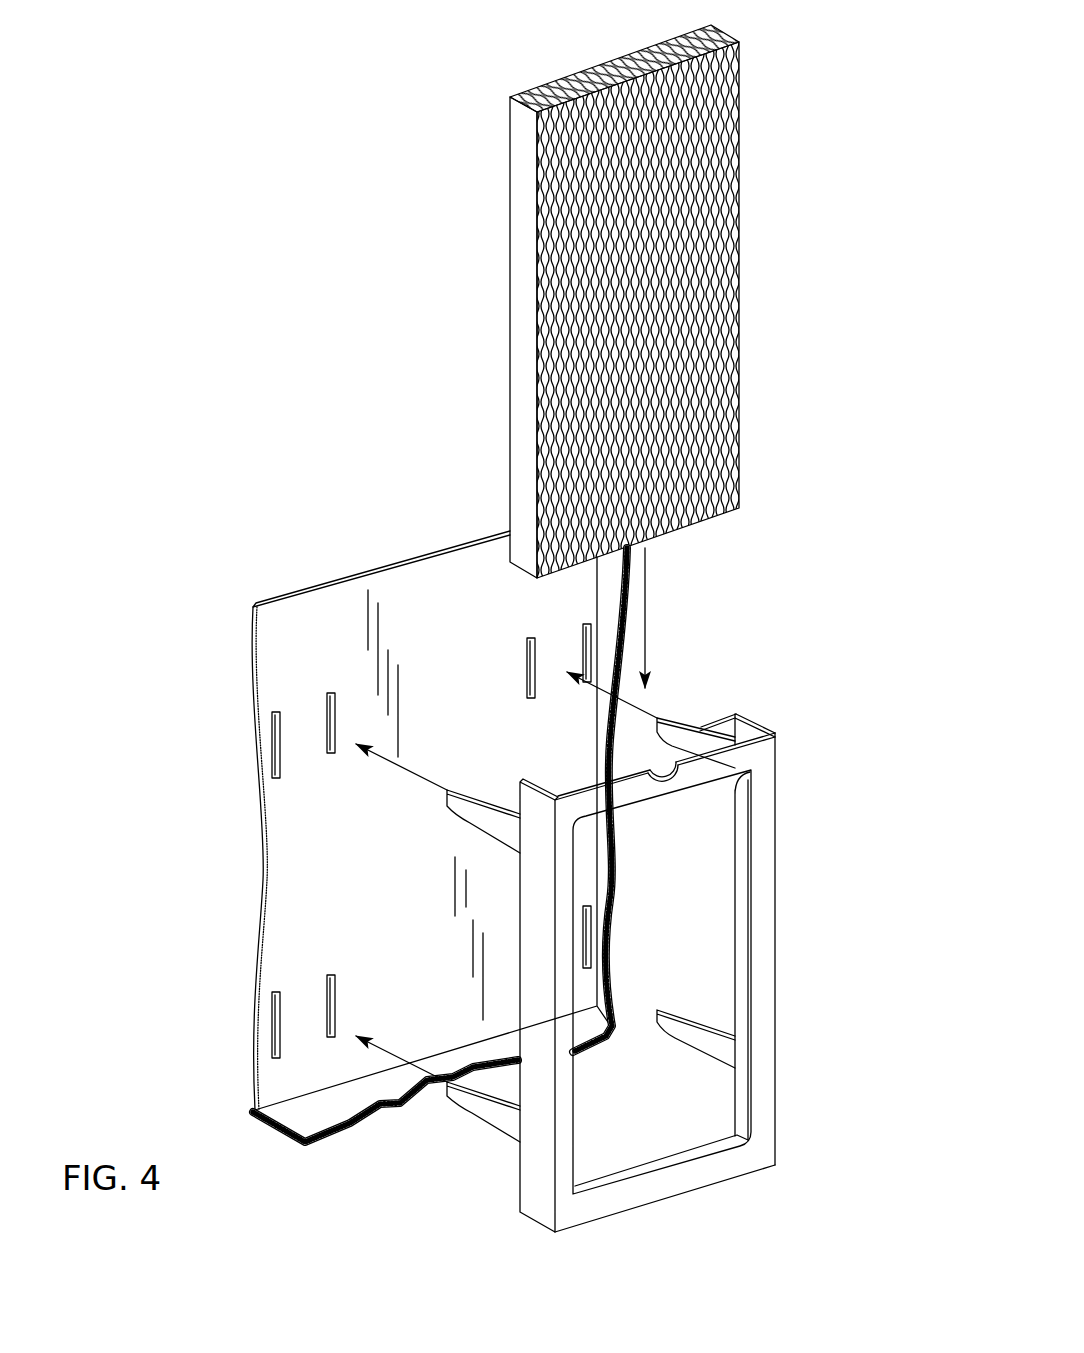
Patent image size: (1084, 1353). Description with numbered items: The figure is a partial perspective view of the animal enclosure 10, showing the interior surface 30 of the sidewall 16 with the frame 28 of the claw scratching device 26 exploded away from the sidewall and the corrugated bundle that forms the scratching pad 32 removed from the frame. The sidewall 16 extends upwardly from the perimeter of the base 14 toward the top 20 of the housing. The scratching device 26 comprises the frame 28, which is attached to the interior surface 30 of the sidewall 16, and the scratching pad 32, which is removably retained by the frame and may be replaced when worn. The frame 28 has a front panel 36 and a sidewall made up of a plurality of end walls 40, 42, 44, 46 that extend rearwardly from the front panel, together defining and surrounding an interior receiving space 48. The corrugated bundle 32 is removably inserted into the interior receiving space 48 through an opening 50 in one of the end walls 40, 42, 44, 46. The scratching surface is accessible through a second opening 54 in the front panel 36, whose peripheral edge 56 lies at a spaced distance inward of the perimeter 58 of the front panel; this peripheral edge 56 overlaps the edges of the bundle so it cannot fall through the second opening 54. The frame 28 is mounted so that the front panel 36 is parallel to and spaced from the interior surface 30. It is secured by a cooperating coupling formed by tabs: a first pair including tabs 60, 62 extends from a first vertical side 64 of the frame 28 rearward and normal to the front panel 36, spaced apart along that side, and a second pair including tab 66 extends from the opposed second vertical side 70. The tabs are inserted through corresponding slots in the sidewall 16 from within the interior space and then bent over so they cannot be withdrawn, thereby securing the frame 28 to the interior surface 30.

The animal enclosure 10 is at (268, 323).
The base 14 is at (332, 1112).
The sidewall 16 is at (255, 830).
The top 20 is at (386, 839).
The claw scratching device 26 is at (828, 563).
The frame 28 is at (780, 774).
The interior surface 30 is at (290, 885).
The scratching pad 32 is at (745, 93).
The front panel 36 is at (766, 886).
The end wall 40 is at (530, 1190).
The end wall 42 is at (622, 1190).
The end wall 44 is at (740, 972).
The end wall 46 is at (736, 712).
The interior receiving space 48 is at (694, 997).
The opening 50 is at (766, 725).
The second opening 54 is at (712, 1172).
The peripheral edge 56 is at (745, 1058).
The perimeter 58 is at (777, 939).
The tab 60 is at (465, 792).
The tab 62 is at (490, 1068).
The first vertical side 64 is at (472, 880).
The tab 66 is at (672, 716).
The second vertical side 70 is at (741, 829).